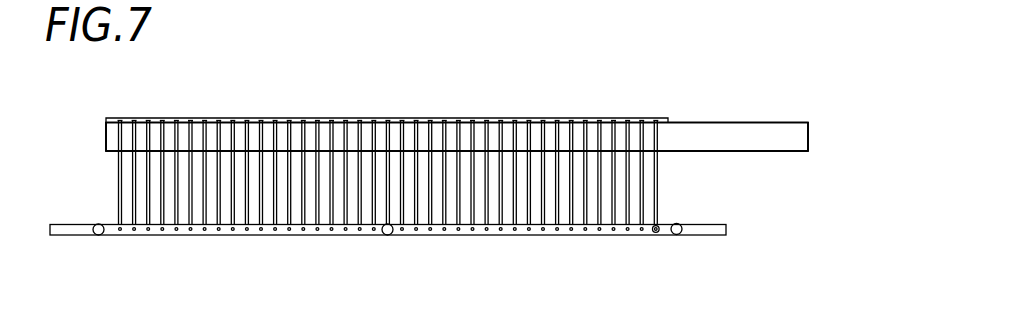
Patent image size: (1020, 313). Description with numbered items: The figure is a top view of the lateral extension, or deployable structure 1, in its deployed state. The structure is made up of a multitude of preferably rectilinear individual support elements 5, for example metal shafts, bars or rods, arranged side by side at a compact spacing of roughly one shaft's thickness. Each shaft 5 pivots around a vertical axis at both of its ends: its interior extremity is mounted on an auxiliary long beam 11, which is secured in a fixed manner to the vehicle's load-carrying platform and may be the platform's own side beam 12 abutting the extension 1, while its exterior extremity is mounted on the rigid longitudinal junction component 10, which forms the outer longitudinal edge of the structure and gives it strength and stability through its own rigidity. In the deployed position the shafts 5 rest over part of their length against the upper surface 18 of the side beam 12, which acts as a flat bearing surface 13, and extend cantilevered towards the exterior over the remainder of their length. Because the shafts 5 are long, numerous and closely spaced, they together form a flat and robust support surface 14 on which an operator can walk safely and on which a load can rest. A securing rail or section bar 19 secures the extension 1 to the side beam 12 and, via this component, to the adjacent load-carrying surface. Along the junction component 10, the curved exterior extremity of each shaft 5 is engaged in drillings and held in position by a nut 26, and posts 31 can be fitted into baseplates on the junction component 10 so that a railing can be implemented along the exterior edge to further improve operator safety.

The deployable structure 1 is at (76, 162).
The rectilinear individual support elements 5 is at (247, 177).
The rigid longitudinal junction component 10 is at (261, 241).
The auxiliary long beam 11 is at (761, 115).
The side beam 12 is at (457, 137).
The flat bearing surface 13 is at (682, 130).
The support surface 14 is at (388, 139).
The upper surface 18 is at (457, 137).
The securing rail or section bar 19 is at (660, 116).
The nut 26 is at (653, 234).
The posts 31 is at (98, 237).